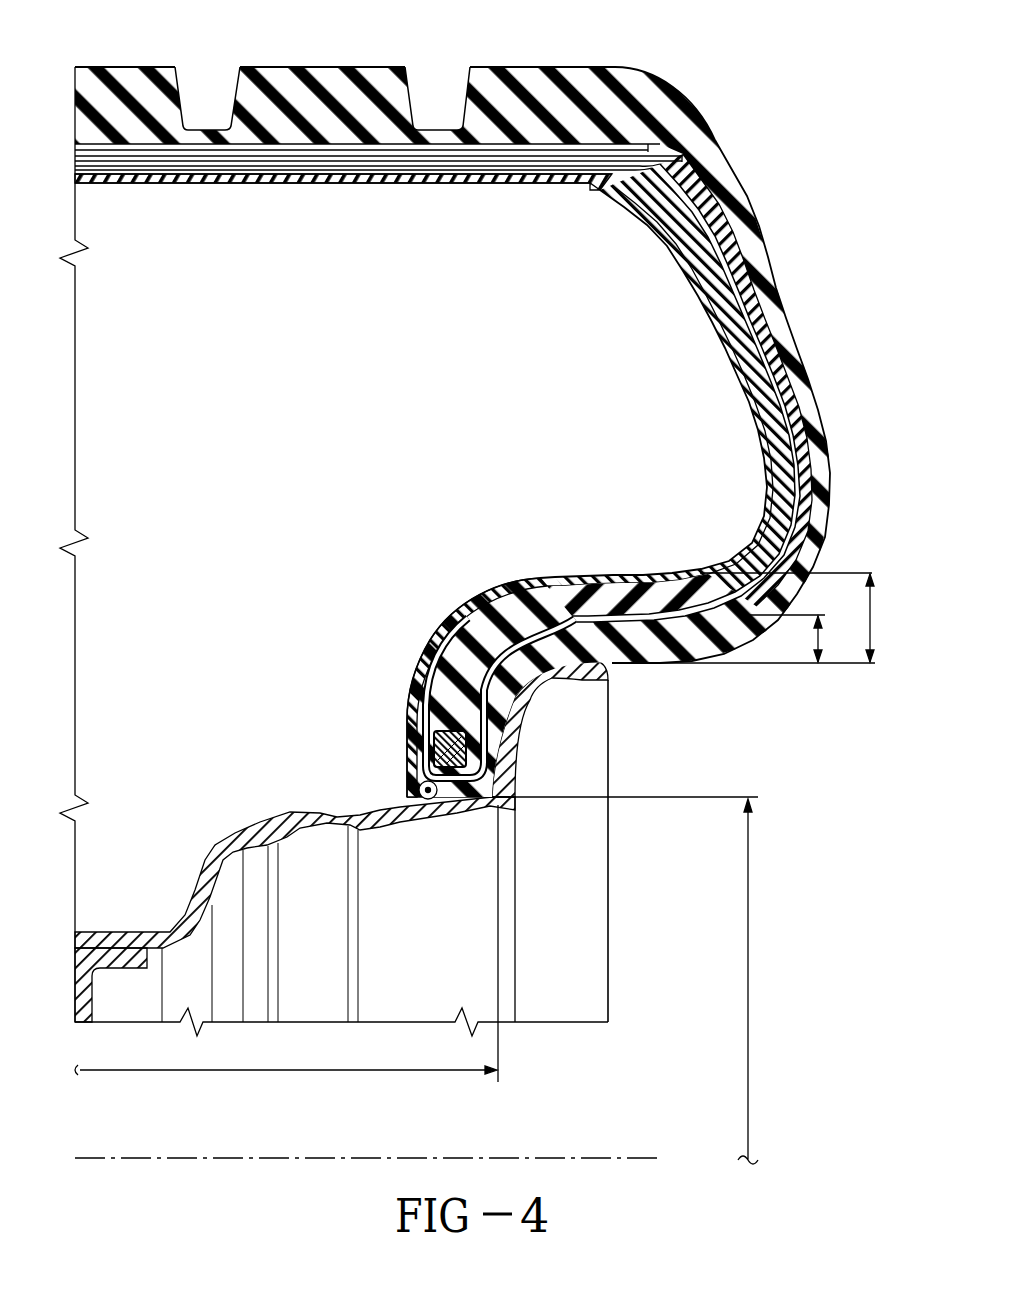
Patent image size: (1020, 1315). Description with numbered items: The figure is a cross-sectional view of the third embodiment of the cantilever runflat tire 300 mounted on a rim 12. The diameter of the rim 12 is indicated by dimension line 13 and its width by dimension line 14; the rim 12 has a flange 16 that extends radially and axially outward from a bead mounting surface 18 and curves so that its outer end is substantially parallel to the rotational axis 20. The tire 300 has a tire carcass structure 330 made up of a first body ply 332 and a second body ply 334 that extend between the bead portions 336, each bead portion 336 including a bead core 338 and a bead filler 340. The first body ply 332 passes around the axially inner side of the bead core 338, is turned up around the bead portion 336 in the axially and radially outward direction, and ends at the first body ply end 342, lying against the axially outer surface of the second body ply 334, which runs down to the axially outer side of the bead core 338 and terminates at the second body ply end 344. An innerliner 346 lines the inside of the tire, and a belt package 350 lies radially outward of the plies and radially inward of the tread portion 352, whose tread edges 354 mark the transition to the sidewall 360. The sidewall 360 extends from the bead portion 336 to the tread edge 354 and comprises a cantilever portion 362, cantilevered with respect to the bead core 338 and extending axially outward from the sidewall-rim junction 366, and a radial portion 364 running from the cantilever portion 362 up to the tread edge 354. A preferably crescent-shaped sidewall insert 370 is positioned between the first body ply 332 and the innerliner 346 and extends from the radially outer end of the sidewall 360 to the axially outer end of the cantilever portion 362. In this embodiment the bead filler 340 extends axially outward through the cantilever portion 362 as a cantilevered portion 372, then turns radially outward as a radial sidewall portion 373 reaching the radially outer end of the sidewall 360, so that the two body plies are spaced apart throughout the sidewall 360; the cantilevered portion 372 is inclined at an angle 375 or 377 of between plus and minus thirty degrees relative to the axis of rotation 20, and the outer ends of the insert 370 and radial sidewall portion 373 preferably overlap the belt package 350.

The cantilever runflat tire 300 is at (465, 512).
The tread portion 352 is at (333, 60).
The belt package 350 is at (494, 138).
The tread edges 354 is at (670, 102).
The tire carcass structure 330 is at (215, 182).
The first body ply 332 is at (279, 170).
The second body ply 334 is at (362, 162).
The innerliner 346 is at (437, 180).
The first body ply end 342 is at (788, 345).
The radial portion 364 is at (714, 338).
The radial sidewall portion 373 is at (781, 384).
The sidewall 360 is at (732, 398).
The sidewall insert 370 is at (762, 505).
The cantilever portion 362 is at (629, 570).
The cantilevered portion 372 is at (577, 605).
The bead filler 340 is at (453, 665).
The bead portion 336 is at (504, 731).
The bead core 338 is at (433, 743).
The second body ply end 344 is at (486, 742).
The flange 16 is at (583, 672).
The sidewall-rim junction 366 is at (616, 666).
The angle 375 is at (817, 643).
The angle 377 is at (869, 626).
The bead mounting surface 18 is at (421, 800).
The rim 12 is at (606, 898).
The dimension line 13 is at (750, 897).
The dimension line 14 is at (268, 1072).
The rotational axis 20 is at (612, 1158).